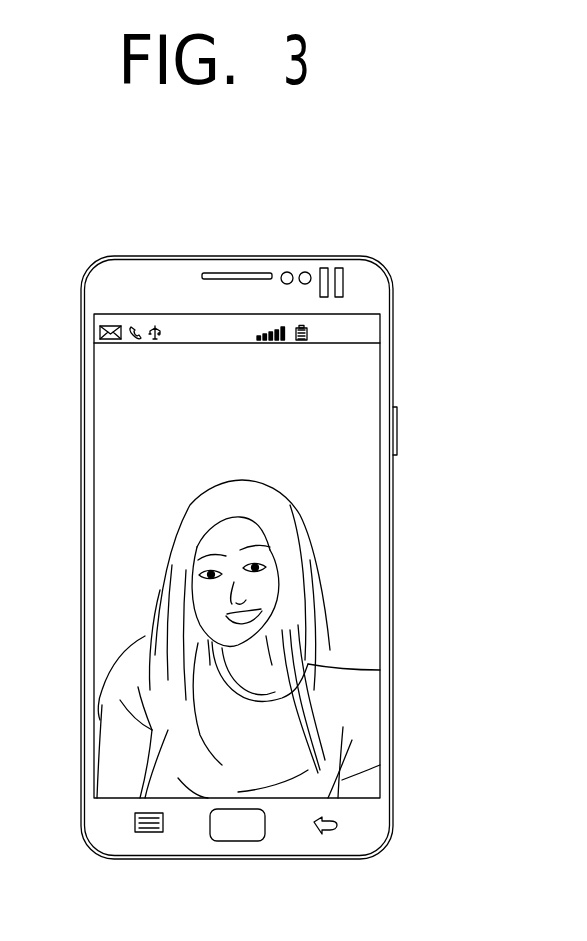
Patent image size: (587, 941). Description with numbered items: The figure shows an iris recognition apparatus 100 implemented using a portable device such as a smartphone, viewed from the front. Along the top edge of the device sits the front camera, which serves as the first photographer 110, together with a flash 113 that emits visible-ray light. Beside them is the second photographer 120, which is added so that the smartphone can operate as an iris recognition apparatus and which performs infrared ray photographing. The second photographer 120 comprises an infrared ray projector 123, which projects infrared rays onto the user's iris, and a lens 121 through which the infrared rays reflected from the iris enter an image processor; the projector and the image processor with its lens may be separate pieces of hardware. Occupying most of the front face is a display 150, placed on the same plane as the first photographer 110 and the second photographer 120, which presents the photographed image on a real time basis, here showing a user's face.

The iris recognition apparatus 100 is at (393, 306).
The first photographer 110 is at (287, 271).
The flash 113 is at (340, 267).
The second photographer 120 is at (312, 215).
The lens 121 is at (305, 271).
The infrared ray projector 123 is at (324, 267).
The display 150 is at (380, 383).